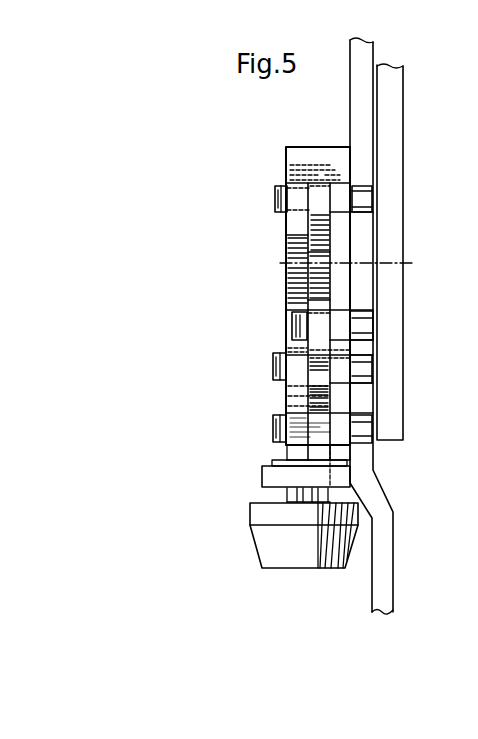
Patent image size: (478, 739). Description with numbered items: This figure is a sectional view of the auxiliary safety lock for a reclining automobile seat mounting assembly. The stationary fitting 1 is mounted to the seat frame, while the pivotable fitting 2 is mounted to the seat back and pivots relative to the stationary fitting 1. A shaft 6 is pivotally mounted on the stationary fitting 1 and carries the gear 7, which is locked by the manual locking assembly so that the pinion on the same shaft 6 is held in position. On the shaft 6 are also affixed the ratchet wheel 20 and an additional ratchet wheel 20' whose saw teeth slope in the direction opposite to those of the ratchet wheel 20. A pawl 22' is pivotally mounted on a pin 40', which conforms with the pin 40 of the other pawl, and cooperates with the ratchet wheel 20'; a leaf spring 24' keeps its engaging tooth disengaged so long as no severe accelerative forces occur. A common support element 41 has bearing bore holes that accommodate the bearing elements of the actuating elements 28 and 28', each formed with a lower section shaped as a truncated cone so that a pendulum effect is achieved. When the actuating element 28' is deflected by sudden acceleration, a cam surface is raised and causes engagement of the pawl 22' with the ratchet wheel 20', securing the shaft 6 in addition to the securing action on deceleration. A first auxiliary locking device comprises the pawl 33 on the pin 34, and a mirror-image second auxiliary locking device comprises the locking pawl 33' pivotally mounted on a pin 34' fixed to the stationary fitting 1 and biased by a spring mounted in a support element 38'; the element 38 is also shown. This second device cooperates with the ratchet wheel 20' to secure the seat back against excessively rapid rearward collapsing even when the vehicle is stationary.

The stationary fitting 1 is at (387, 580).
The pivotable fitting 2 is at (403, 92).
The shaft 6 is at (363, 260).
The gear 7 is at (342, 235).
The ratchet wheel 20 is at (278, 212).
The ratchet wheel 20' is at (272, 321).
The pawl 22' is at (277, 397).
The leaf spring 24' is at (371, 436).
The actuating element 28 is at (333, 560).
The actuating element 28' is at (280, 535).
The pawl 33 is at (285, 282).
The locking pawl 33' is at (269, 271).
The pin 34 is at (380, 318).
The pin 34' is at (391, 180).
The flange 38 is at (293, 349).
The support element 38' is at (318, 278).
The pin 40 is at (382, 365).
The pin 40' is at (329, 428).
The common support element 41 is at (263, 482).